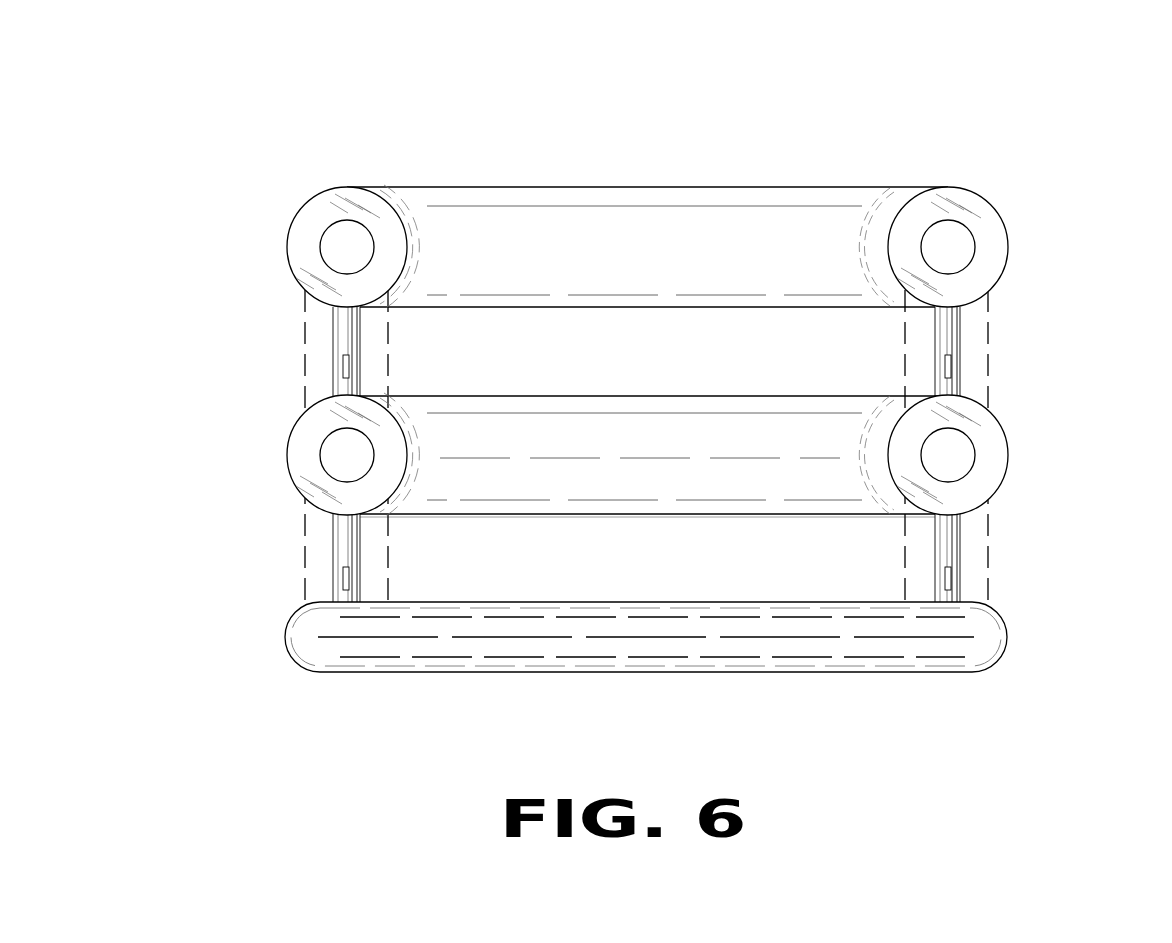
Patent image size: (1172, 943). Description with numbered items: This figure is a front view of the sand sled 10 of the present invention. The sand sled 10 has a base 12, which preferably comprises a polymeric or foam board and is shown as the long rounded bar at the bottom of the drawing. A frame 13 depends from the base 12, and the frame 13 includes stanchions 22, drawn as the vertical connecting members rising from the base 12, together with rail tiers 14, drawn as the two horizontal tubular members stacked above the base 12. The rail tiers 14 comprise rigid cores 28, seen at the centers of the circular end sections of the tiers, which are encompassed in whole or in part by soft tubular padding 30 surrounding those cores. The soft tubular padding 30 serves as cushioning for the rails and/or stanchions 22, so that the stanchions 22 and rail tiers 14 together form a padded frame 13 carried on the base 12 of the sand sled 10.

The sand sled 10 is at (1060, 140).
The base 12 is at (515, 665).
The frame 13 is at (308, 215).
The rail tiers 14 is at (300, 268).
The stanchions 22 is at (960, 535).
The rigid cores 28 is at (957, 467).
The soft tubular padding 30 is at (987, 273).